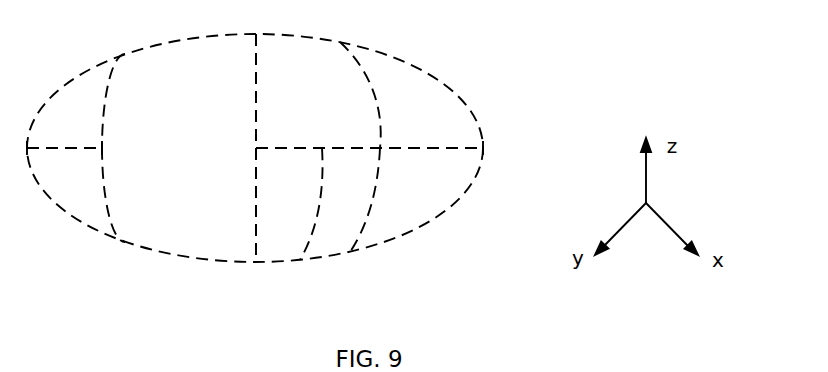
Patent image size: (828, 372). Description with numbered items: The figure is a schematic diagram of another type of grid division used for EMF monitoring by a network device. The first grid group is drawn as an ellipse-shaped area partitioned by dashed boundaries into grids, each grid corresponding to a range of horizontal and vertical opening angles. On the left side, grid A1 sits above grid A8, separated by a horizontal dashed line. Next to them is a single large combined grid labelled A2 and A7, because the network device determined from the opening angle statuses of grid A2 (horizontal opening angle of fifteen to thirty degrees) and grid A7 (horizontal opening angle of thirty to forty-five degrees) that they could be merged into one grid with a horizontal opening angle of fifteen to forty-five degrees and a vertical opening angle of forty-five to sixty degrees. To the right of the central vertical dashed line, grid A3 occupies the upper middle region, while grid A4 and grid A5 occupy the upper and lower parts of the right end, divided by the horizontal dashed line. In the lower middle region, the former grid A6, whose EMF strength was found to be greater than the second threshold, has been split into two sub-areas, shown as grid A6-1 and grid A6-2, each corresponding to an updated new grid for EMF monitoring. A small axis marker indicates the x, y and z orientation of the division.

The grid A1 is at (76, 101).
The grid A8 is at (92, 191).
The grid A2 is at (205, 91).
The grid A7 is at (226, 193).
The grid A3 is at (369, 124).
The grid A4 is at (387, 95).
The grid A5 is at (392, 200).
The grid A6-1 is at (278, 237).
The grid A6-2 is at (327, 233).